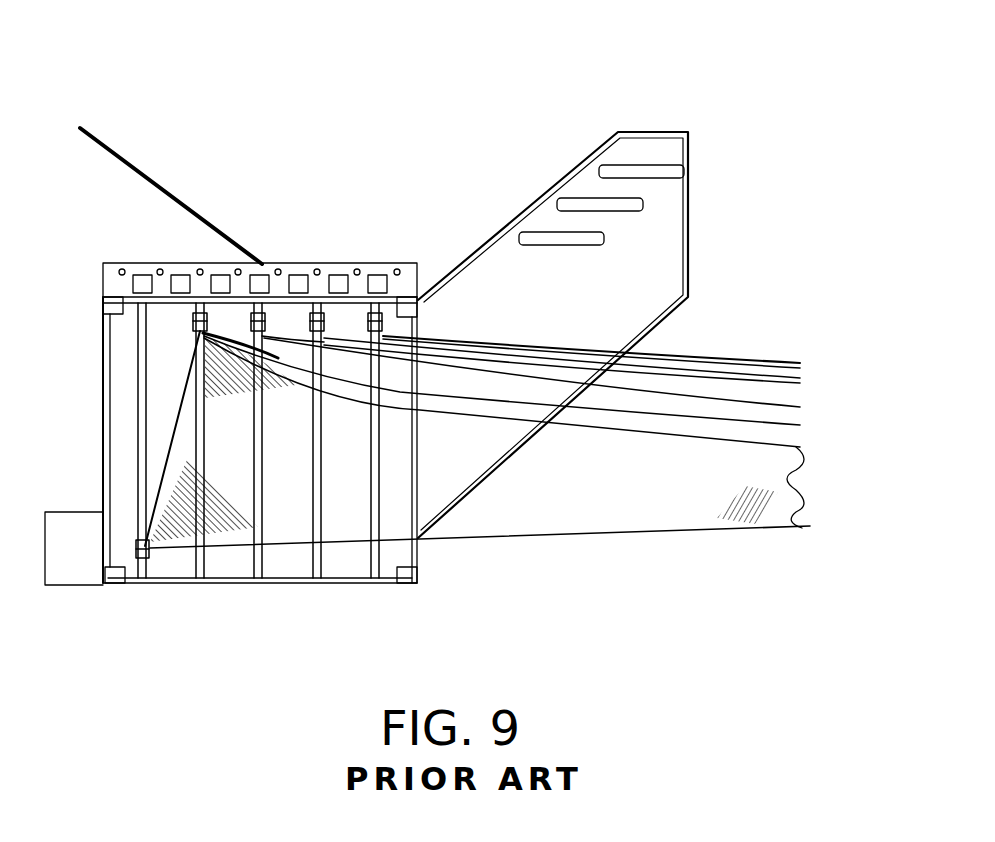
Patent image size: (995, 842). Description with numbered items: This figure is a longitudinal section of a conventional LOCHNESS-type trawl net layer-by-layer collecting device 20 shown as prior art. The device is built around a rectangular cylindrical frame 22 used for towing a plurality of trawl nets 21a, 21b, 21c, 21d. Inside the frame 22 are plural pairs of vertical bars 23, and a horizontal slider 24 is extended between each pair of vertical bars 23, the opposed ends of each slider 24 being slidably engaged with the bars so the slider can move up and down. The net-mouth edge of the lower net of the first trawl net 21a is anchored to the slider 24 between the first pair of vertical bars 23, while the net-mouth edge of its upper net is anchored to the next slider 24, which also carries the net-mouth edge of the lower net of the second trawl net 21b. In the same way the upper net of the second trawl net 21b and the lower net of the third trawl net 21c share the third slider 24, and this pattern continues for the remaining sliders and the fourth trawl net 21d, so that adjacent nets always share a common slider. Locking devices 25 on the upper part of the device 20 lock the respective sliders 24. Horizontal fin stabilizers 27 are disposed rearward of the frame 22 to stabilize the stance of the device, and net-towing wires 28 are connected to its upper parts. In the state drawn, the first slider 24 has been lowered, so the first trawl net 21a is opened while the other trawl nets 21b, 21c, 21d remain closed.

The LOCHNESS-type trawl net layer-by-layer collecting device 20 is at (321, 202).
The first trawl net 21a is at (783, 468).
The second trawl net 21b is at (778, 412).
The third trawl net 21c is at (778, 386).
The fourth trawl net 21d is at (733, 362).
The rectangular cylindrical frame 22 is at (113, 362).
The vertical bars 23 is at (140, 412).
The horizontal slider 24 is at (196, 325).
The locking devices 25 is at (143, 275).
The horizontal fin stabilizers 27 is at (610, 165).
The net-towing wires 28 is at (164, 185).